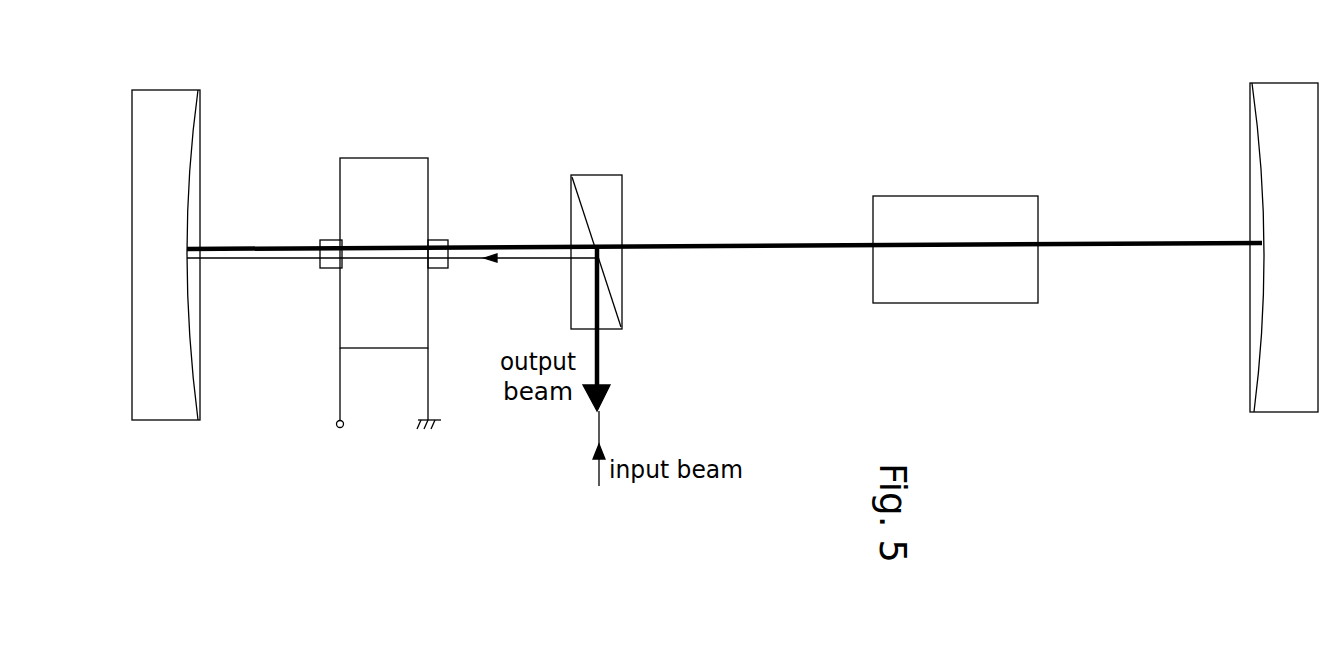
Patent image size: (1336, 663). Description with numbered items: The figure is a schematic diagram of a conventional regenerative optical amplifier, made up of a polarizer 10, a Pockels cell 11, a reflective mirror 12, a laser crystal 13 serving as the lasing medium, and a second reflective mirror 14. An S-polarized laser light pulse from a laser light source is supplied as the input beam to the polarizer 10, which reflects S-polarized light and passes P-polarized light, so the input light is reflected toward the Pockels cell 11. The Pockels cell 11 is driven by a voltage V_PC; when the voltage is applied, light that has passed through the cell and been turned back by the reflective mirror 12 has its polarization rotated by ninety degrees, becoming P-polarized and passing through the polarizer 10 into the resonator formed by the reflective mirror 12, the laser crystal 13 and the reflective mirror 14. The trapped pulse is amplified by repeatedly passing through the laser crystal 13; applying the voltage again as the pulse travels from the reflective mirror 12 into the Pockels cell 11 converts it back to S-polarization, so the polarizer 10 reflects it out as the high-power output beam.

The polarizer 10 is at (588, 175).
The Pockels cell 11 is at (380, 158).
The reflective mirror 12 is at (165, 90).
The laser crystal 13 is at (946, 196).
The reflective mirror 14 is at (1265, 83).